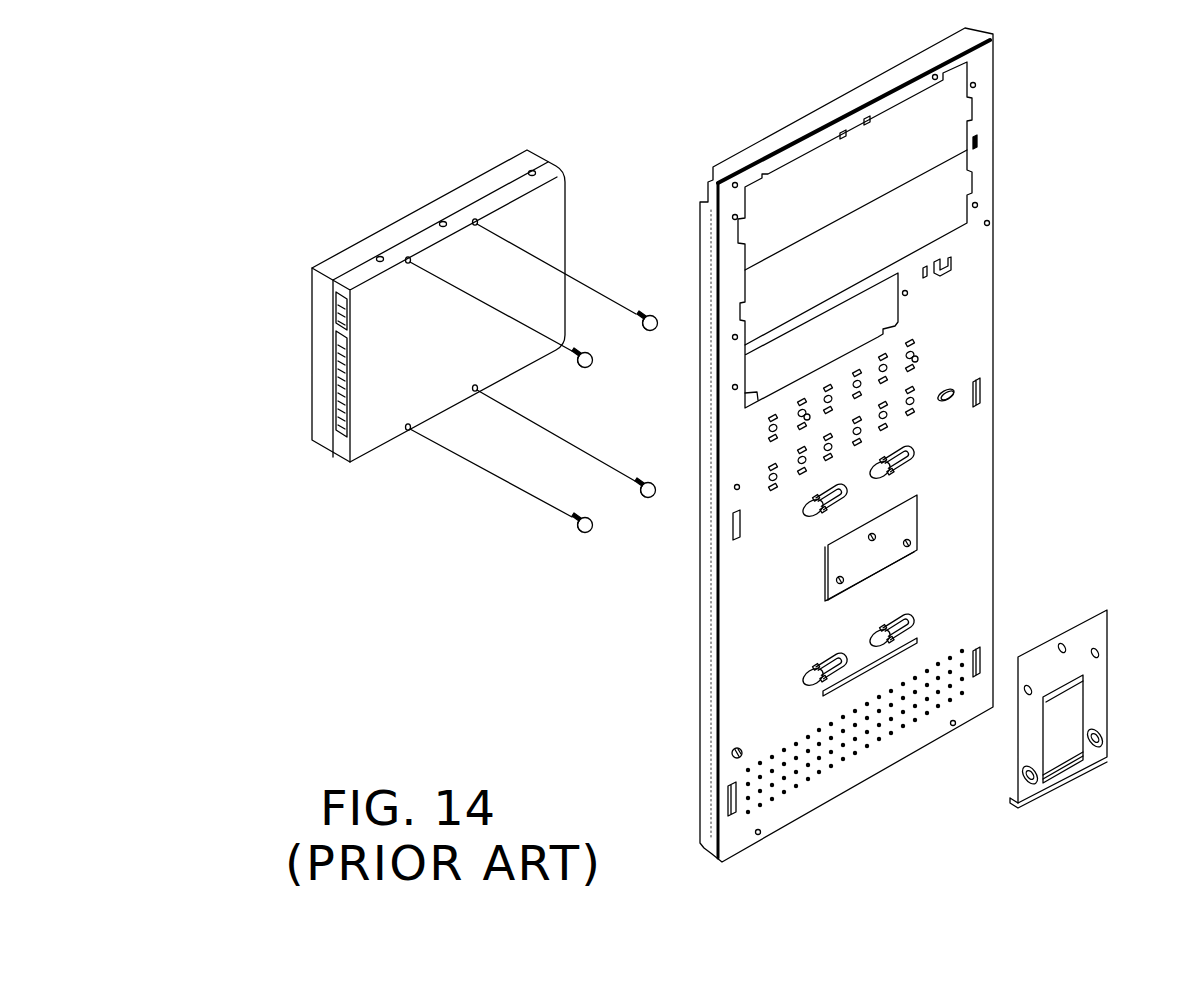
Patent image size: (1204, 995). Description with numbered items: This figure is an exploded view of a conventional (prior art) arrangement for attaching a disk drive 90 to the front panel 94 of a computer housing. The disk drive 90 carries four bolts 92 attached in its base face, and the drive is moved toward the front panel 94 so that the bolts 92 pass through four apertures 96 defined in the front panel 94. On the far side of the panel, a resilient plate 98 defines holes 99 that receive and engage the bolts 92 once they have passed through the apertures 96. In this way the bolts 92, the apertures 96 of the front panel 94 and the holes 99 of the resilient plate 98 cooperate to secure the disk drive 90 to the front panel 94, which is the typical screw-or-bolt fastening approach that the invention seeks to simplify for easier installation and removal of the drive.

The disk drive 90 is at (380, 408).
The bolts 92 is at (587, 537).
The front panel 94 is at (965, 327).
The apertures 96 is at (913, 627).
The resilient plate 98 is at (1097, 633).
The holes 99 is at (1102, 742).